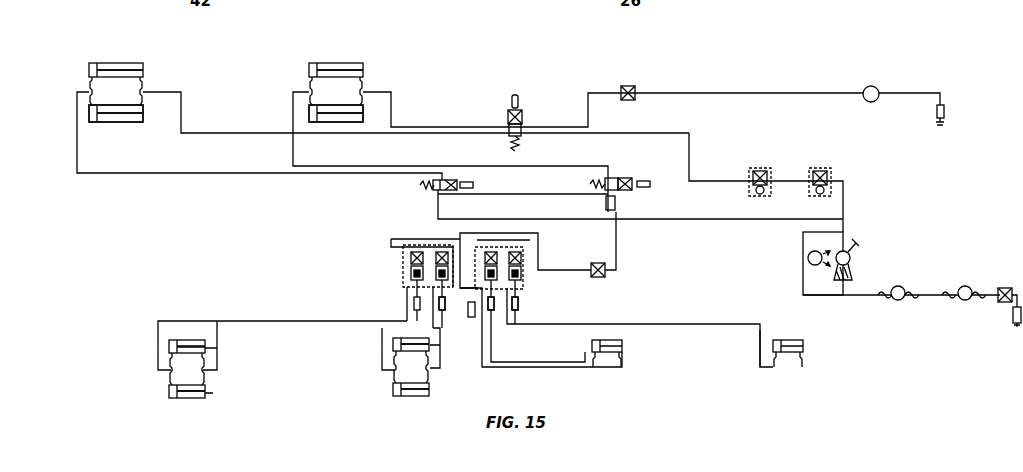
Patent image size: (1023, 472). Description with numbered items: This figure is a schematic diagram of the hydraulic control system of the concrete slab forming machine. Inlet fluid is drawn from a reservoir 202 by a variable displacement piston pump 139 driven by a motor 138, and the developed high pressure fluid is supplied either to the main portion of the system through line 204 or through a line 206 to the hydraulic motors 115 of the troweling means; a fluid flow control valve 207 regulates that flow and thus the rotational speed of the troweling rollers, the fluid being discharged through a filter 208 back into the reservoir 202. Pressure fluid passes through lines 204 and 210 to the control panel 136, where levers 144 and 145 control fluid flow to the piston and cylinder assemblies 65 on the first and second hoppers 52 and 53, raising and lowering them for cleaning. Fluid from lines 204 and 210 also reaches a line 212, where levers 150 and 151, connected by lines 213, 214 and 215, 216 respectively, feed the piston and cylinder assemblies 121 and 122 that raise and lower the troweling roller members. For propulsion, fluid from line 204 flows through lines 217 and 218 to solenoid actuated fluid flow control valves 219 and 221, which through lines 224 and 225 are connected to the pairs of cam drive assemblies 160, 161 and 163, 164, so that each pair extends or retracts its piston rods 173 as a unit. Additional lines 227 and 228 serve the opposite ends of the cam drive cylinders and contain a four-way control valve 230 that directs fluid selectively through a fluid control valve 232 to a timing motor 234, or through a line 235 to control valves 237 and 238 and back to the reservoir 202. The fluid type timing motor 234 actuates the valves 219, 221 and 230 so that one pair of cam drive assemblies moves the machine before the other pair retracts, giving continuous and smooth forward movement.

The cam drive assembly 161 is at (118, 63).
The cam drive assembly 160 is at (122, 122).
The cam drive assembly 164 is at (330, 63).
The cam drive assembly 163 is at (315, 122).
The piston rod 173 is at (144, 70).
The line 225 is at (175, 173).
The line 227 is at (181, 103).
The line 228 is at (432, 127).
The line 235 is at (689, 150).
The line 224 is at (575, 166).
The four-way control valve 230 is at (522, 112).
The fluid control valve 232 is at (637, 90).
The timing motor 234 is at (878, 86).
The control valve 237 is at (763, 170).
The control valve 238 is at (822, 170).
The fluid flow control valve 221 is at (446, 180).
The fluid flow control valve 219 is at (624, 176).
The line 217 is at (616, 200).
The line 218 is at (440, 210).
The line 210 is at (617, 248).
The control panel 136 is at (425, 235).
The line 212 is at (527, 258).
The lever 144 is at (412, 308).
The lever 145 is at (446, 312).
The lever 150 is at (492, 311).
The lever 151 is at (518, 308).
The line 213 is at (550, 367).
The line 214 is at (540, 362).
The line 216 is at (745, 324).
The line 215 is at (750, 330).
The piston and cylinder assembly 121 is at (612, 340).
The piston and cylinder assembly 122 is at (790, 340).
The line 204 is at (828, 232).
The motor 138 is at (808, 252).
The variable displacement piston pump 139 is at (832, 270).
The reservoir 202 is at (862, 278).
The line 206 is at (843, 295).
The hydraulic motor 115 is at (898, 287).
The fluid flow control valve 207 is at (1005, 287).
The filter 208 is at (1013, 313).
The first hopper 52 is at (160, 378).
The second hopper 53 is at (378, 378).
The piston and cylinder assembly 65 is at (190, 340).